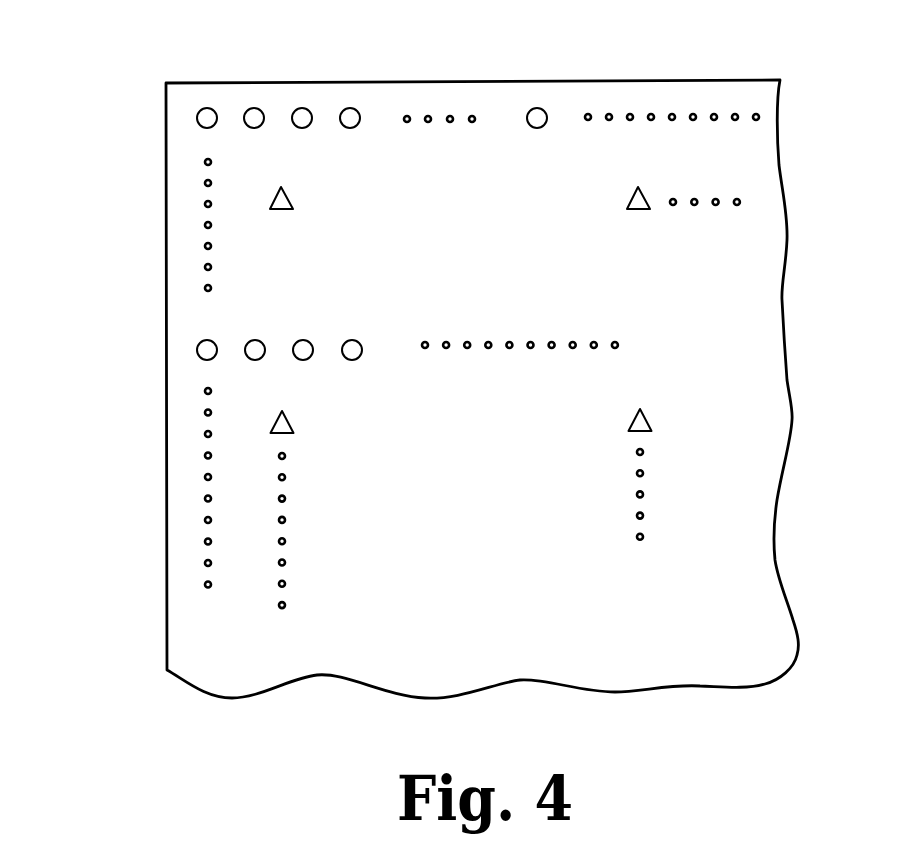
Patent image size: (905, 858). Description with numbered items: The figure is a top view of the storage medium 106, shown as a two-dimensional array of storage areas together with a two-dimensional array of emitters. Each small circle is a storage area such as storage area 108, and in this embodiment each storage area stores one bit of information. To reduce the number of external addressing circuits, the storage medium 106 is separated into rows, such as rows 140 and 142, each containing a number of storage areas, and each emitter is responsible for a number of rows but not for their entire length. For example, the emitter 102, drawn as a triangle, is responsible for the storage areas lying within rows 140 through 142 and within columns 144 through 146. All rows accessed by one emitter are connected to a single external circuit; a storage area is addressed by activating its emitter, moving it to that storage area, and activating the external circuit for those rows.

The field emitter 102 is at (292, 200).
The storage medium 106 is at (687, 82).
The storage area 108 is at (208, 115).
The row 140 is at (395, 94).
The row 142 is at (190, 346).
The column 144 is at (221, 68).
The column 146 is at (537, 108).